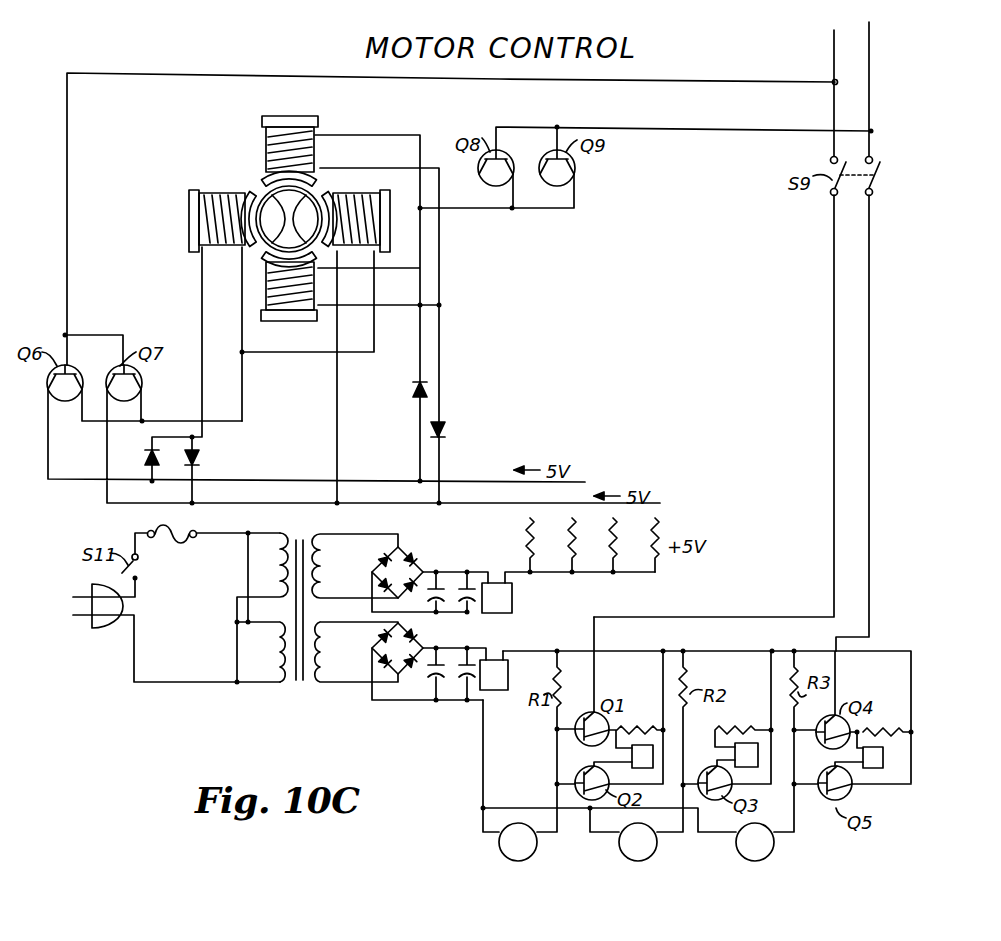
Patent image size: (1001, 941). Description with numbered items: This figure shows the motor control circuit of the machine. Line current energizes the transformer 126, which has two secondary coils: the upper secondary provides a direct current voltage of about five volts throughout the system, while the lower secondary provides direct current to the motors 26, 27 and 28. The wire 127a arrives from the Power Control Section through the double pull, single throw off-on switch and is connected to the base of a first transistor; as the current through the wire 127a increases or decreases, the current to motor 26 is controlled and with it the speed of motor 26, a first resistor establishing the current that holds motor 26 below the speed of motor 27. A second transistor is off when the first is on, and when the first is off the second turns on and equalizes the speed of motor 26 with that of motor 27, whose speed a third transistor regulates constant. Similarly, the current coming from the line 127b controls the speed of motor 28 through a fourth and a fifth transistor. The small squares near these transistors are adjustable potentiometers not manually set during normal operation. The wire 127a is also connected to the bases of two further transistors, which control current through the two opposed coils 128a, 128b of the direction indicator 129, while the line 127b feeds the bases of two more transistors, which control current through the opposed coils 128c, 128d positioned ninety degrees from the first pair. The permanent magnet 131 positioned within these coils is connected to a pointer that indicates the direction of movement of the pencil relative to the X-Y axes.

The motor 26 is at (504, 860).
The motor 27 is at (624, 860).
The motor 28 is at (744, 862).
The transformer 126 is at (297, 683).
The wire 127a is at (832, 390).
The line 127b is at (868, 428).
The coil 128a is at (213, 196).
The coil 128b is at (391, 226).
The coil 128c is at (315, 146).
The coil 128d is at (279, 318).
The direction indicator 129 is at (340, 173).
The permanent magnet 131 is at (285, 214).